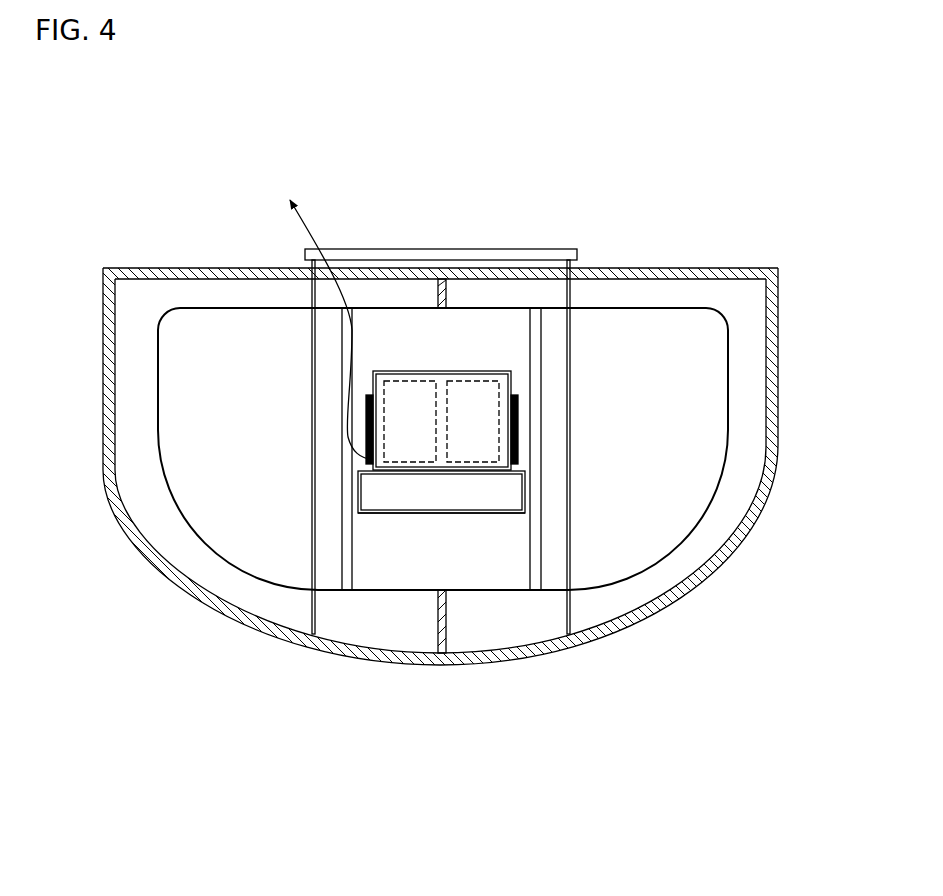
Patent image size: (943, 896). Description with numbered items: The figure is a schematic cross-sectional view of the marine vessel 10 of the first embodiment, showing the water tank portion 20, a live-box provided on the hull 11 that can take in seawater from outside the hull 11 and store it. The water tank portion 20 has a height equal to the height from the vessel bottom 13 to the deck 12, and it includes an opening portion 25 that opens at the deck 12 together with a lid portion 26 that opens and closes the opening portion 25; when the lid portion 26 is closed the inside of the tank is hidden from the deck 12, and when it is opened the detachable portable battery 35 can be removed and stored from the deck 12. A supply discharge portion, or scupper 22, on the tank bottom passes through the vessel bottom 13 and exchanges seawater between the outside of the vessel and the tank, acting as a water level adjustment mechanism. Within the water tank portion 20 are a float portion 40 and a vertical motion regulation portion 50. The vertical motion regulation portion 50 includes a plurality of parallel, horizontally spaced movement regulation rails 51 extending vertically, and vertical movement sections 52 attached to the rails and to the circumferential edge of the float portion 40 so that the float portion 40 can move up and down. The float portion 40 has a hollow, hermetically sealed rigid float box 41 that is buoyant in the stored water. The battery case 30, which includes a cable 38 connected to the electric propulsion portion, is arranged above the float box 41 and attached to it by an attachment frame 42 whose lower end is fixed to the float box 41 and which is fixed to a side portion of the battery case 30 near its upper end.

The electronic device 10 is at (142, 155).
The hull 11 is at (760, 272).
The deck 12 is at (700, 270).
The vessel bottom 13 is at (657, 620).
The water tank portion 20 is at (446, 365).
The opening portion 25 is at (542, 240).
The lid portion 26 is at (408, 249).
The supply discharge portion (scupper) 22 is at (452, 650).
The battery case 30 is at (405, 371).
The portable battery 35 is at (497, 381).
The cable 38 is at (347, 397).
The float portion 40 is at (321, 614).
The float box 41 is at (401, 515).
The attachment frame 42 is at (517, 418).
The vertical motion regulation portion 50 is at (386, 509).
The movement regulation rail 51 is at (345, 551).
The vertical movement section 52 is at (355, 491).